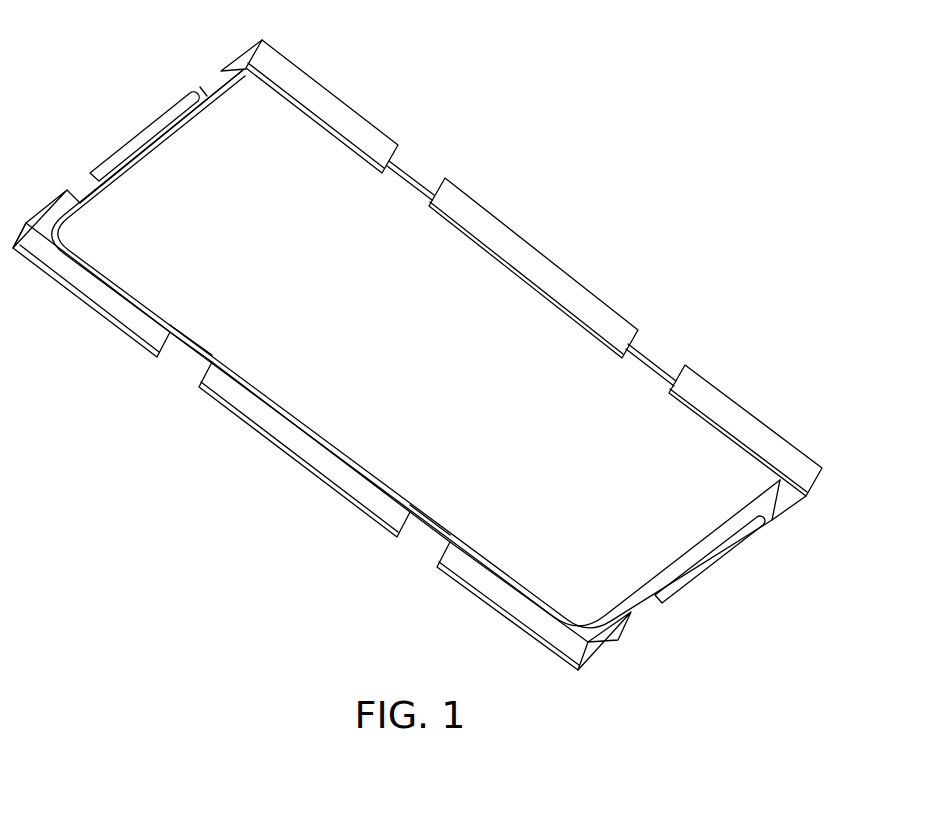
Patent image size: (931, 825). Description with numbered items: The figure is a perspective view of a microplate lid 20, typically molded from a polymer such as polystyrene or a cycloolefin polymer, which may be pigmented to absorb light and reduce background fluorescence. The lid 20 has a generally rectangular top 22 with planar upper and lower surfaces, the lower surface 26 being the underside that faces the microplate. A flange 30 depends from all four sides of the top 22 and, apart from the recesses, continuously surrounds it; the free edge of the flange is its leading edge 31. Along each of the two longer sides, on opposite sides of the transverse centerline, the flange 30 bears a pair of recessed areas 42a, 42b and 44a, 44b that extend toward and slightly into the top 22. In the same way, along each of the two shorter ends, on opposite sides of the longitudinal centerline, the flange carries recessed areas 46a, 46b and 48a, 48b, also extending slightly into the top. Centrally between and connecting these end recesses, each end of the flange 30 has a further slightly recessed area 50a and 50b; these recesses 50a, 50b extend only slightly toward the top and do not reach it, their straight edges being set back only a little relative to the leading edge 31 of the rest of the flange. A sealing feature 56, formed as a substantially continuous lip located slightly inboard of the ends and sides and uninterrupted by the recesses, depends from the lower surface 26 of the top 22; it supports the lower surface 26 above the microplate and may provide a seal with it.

The lid 20 is at (314, 395).
The top 22 is at (364, 207).
The lower surface 26 is at (408, 250).
The flange 30 is at (58, 282).
The leading edge 31 is at (101, 318).
The recessed area 42a is at (668, 345).
The recessed area 42b is at (414, 547).
The recessed area 44a is at (444, 164).
The recessed area 44b is at (180, 365).
The recessed area 46a is at (764, 537).
The recessed area 46b is at (199, 73).
The recessed area 48a is at (644, 622).
The recessed area 48b is at (81, 171).
The slightly recessed area 50a is at (709, 592).
The slightly recessed area 50b is at (162, 113).
The sealing feature 56 is at (194, 123).